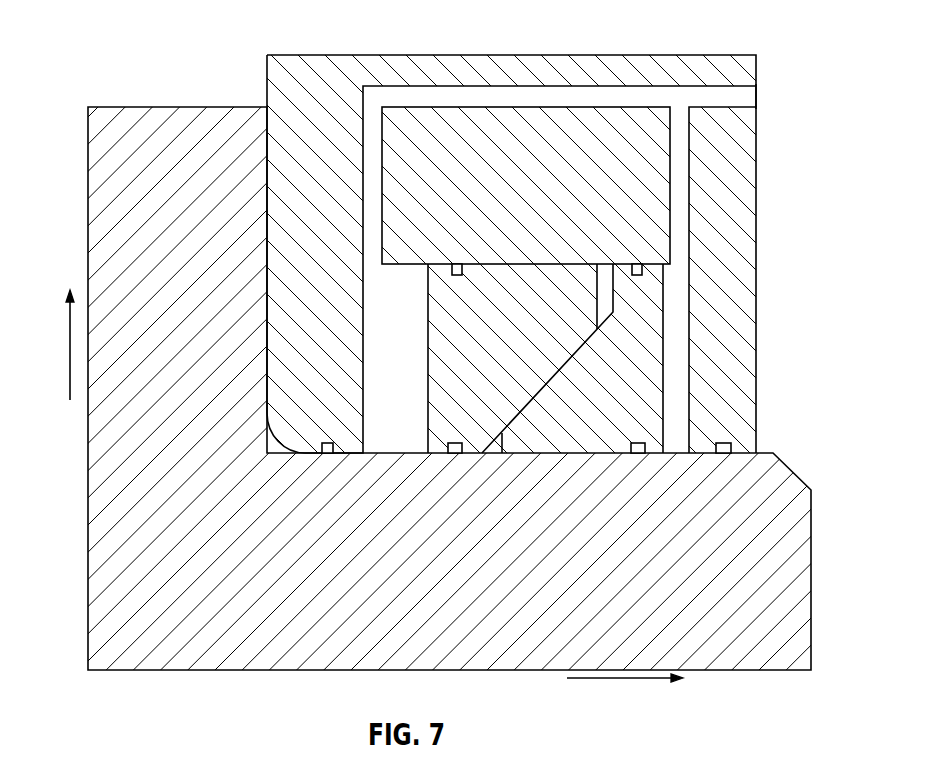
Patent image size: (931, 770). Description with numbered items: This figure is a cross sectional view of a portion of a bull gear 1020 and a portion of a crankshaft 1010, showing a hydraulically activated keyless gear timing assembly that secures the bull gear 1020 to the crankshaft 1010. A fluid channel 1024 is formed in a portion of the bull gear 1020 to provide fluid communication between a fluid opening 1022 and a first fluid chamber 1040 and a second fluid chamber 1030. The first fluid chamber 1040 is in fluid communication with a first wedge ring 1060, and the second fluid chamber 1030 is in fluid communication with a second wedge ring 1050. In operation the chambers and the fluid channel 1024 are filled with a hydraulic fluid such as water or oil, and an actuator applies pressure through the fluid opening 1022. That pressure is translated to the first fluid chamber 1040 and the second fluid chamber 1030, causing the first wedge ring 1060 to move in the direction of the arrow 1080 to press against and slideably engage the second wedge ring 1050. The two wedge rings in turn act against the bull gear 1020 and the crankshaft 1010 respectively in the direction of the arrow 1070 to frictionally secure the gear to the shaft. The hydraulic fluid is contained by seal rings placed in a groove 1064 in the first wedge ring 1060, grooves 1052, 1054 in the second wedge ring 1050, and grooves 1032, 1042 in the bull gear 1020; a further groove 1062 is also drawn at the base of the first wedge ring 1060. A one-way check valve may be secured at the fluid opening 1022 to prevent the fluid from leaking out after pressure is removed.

The crankshaft 1010 is at (162, 655).
The bull gear 1020 is at (741, 34).
The fluid opening 1022 is at (762, 90).
The fluid channel 1024 is at (567, 90).
The second fluid chamber 1030 is at (674, 335).
The groove 1032 is at (724, 455).
The first fluid chamber 1040 is at (387, 428).
The groove 1042 is at (327, 455).
The second wedge ring 1050 is at (570, 440).
The groove 1052 is at (640, 455).
The groove 1054 is at (637, 264).
The first wedge ring 1060 is at (447, 430).
The bond joint 1062 is at (457, 455).
The groove 1064 is at (457, 264).
The arrow 1070 is at (68, 340).
The arrow 1080 is at (630, 680).